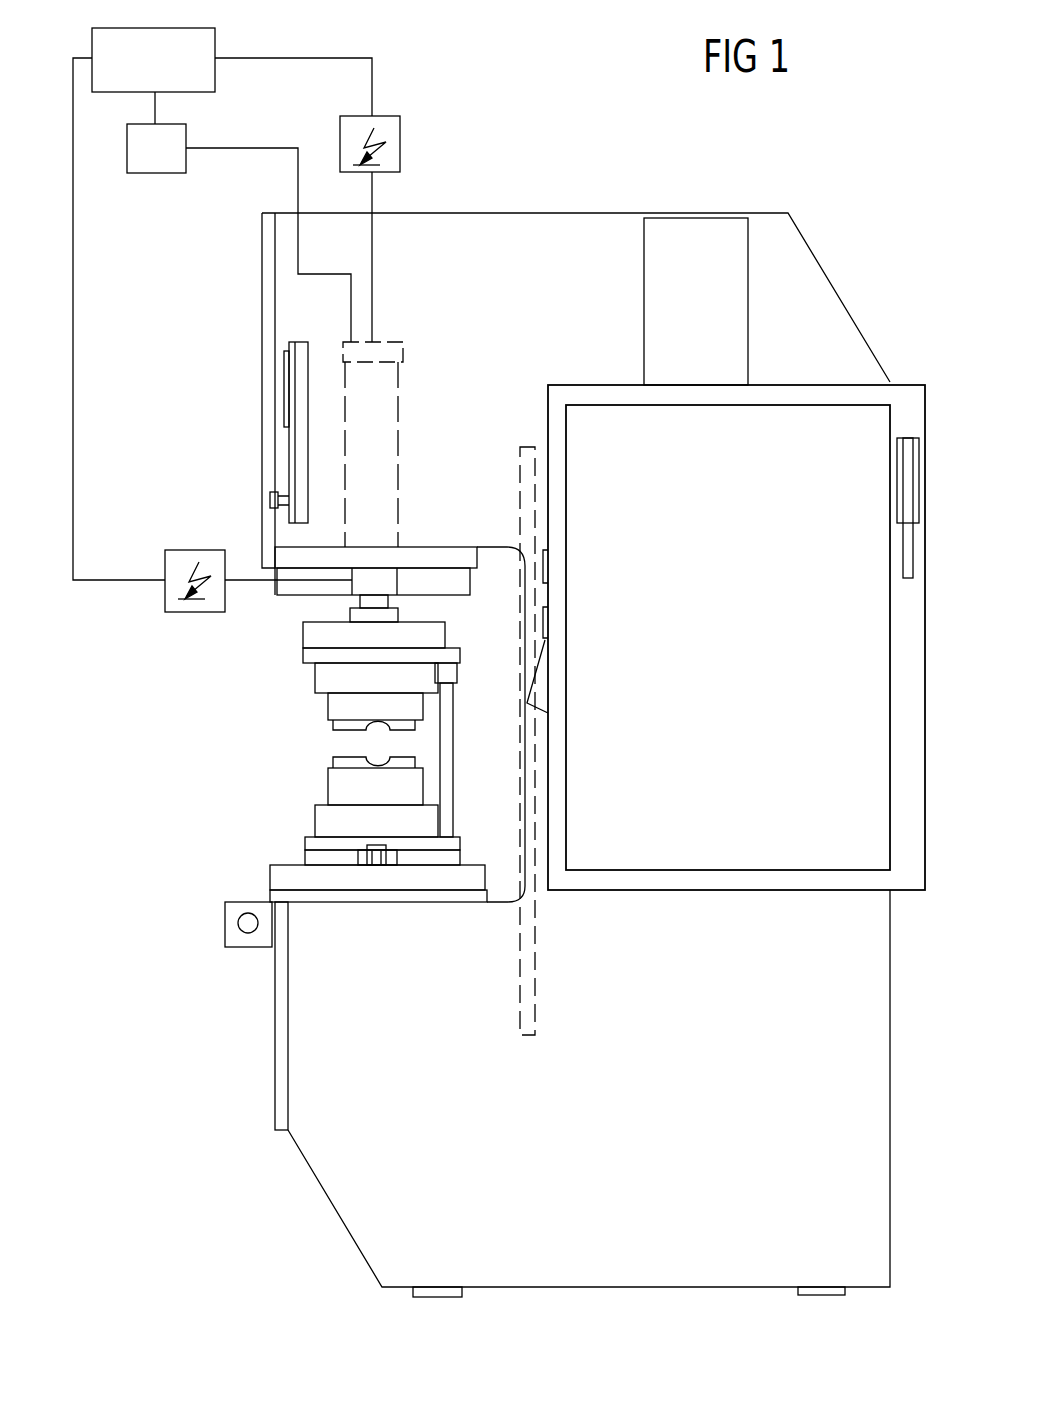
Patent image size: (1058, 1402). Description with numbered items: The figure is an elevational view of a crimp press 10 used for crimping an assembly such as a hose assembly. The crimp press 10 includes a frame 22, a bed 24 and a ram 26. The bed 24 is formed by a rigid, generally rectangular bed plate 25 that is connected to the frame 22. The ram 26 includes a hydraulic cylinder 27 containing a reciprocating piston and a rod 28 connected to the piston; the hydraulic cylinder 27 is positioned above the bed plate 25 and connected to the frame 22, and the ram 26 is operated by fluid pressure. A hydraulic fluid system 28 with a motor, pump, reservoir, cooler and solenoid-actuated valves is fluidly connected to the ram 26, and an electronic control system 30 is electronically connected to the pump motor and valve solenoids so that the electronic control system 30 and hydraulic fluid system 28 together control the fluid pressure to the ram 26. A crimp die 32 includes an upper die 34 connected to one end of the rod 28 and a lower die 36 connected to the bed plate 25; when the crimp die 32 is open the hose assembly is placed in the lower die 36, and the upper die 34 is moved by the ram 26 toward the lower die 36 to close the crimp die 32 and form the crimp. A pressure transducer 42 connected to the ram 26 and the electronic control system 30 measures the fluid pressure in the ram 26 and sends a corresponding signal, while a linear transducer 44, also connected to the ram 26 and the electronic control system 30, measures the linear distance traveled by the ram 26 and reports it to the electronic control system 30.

The crimp press 10 is at (826, 244).
The frame 22 is at (310, 972).
The bed 24 is at (272, 870).
The bed plate 25 is at (295, 877).
The ram 26 is at (342, 400).
The hydraulic cylinder 27 is at (357, 438).
The rod 28 is at (186, 160).
The electronic control system 30 is at (216, 28).
The crimp die 32 is at (327, 718).
The upper die 34 is at (340, 680).
The lower die 36 is at (325, 820).
The pressure transducer 42 is at (185, 550).
The linear transducer 44 is at (400, 153).